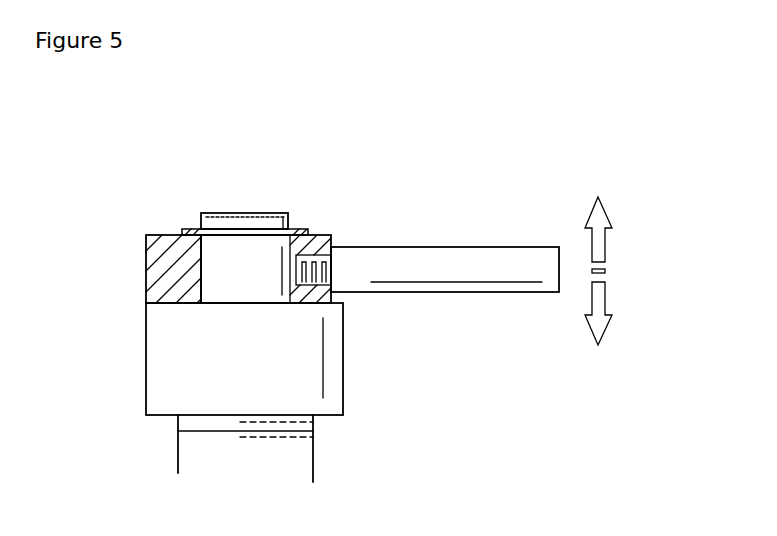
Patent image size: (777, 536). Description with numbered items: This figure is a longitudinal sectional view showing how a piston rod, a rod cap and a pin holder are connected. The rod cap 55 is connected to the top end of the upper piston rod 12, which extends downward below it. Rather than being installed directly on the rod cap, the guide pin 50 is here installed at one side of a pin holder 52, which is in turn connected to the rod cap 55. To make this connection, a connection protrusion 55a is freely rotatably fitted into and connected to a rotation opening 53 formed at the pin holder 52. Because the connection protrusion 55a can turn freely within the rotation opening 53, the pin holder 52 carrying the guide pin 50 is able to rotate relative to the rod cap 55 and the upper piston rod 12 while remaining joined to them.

The upper piston rod 12 is at (212, 458).
The guide pin 50 is at (417, 262).
The pin holder 52 is at (163, 250).
The rotation opening 53 is at (202, 260).
The rod cap 55 is at (265, 368).
The connection protrusion 55a is at (240, 275).